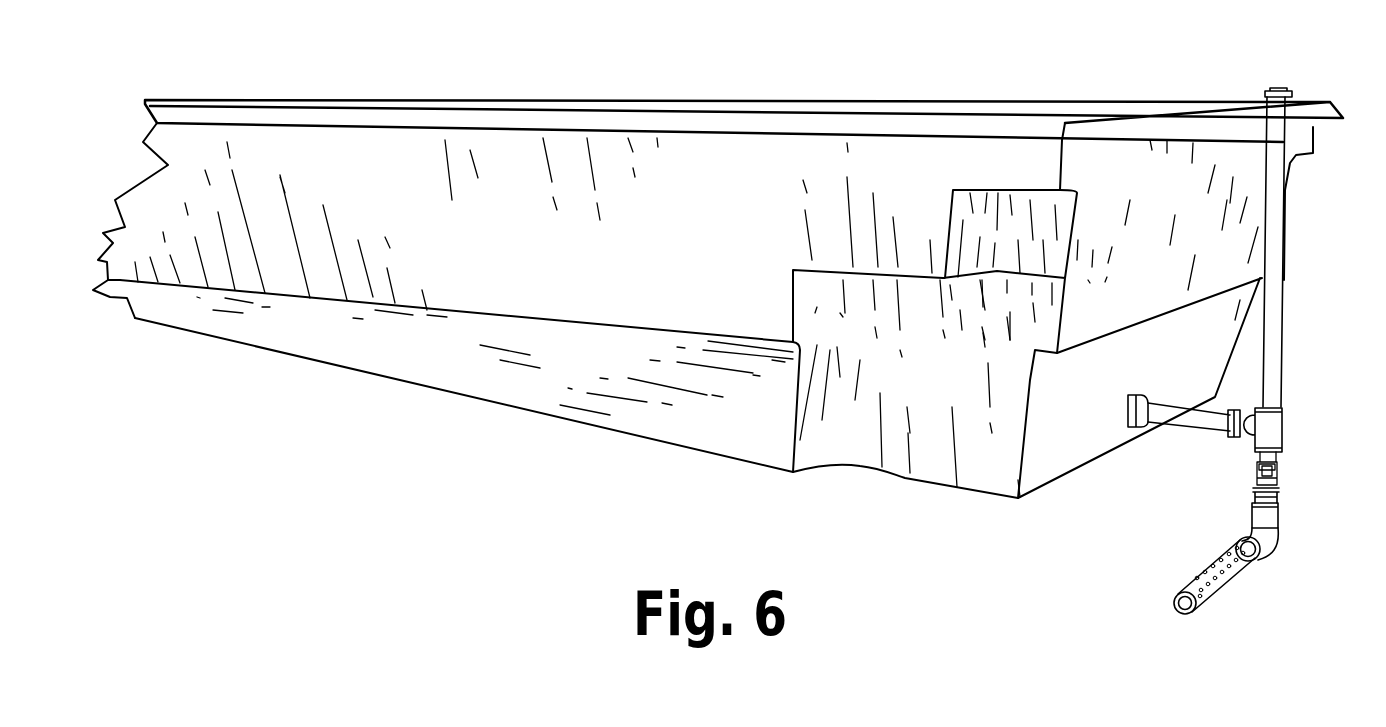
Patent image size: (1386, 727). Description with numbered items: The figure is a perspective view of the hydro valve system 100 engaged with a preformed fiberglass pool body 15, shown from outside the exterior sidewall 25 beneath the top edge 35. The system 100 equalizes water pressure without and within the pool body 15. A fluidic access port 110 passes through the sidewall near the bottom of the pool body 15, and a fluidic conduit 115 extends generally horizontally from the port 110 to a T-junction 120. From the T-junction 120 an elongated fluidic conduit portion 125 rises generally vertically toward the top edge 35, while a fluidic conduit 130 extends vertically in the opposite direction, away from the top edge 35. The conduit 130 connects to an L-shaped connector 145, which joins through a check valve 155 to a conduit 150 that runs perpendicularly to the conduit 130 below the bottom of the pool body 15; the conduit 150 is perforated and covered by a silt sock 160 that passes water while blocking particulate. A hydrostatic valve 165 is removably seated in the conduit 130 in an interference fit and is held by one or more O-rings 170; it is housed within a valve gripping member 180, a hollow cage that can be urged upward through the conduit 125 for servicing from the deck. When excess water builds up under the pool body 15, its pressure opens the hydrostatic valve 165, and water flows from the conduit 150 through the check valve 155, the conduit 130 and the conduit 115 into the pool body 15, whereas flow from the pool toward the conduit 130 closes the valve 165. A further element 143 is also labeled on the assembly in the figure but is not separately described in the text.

The pool body 15 is at (721, 268).
The exterior sidewall 25 is at (1102, 173).
The top edge 35 is at (1312, 102).
The hydro valve system 100 is at (1170, 553).
The fluidic access port 110 is at (1141, 395).
The fluidic conduit 115 is at (1210, 430).
The T-junction 120 is at (1282, 430).
The elongated fluidic conduit portion 125 is at (1280, 357).
The fluidic conduit 130 is at (1278, 518).
The elbow outlet 143 is at (1278, 540).
The L-shaped connector 145 is at (1280, 88).
The conduit 150 is at (1249, 597).
The check valve 155 is at (1262, 557).
The silt sock 160 is at (1217, 597).
The hydrostatic valve 165 is at (1278, 472).
The O-ring 170 is at (1278, 495).
The valve gripping member 180 is at (1257, 472).